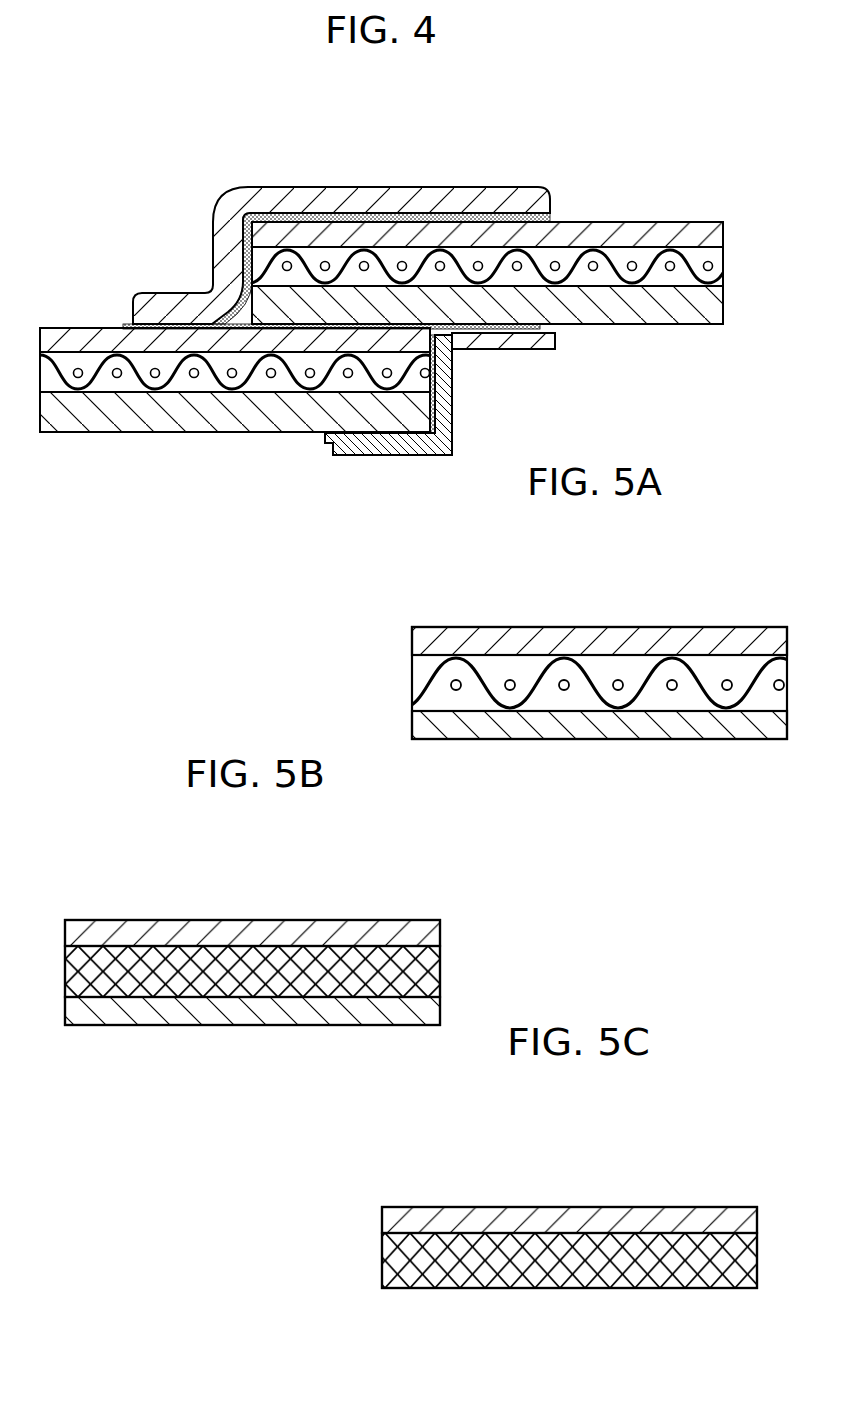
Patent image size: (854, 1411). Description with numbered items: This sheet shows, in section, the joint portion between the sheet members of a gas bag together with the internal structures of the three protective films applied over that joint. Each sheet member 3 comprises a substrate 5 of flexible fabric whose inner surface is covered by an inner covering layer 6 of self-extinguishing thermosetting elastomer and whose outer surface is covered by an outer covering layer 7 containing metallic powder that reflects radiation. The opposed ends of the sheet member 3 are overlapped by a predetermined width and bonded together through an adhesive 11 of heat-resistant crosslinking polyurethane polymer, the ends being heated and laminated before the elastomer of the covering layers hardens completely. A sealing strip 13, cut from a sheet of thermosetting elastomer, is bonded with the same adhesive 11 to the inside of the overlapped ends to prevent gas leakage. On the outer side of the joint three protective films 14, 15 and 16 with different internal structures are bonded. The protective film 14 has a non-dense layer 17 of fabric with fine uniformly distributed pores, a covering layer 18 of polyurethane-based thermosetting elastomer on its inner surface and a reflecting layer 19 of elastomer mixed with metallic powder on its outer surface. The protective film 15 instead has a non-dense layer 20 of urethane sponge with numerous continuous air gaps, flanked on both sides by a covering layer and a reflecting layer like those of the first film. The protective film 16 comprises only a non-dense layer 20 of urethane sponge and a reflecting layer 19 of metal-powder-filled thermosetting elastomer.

In FIG. 4, the sheet member 3 is at (58, 328).
In FIG. 4, the substrate 5 is at (688, 263).
In FIG. 4, the inner covering layer 6 is at (636, 315).
In FIG. 4, the outer covering layer 7 is at (693, 235).
In FIG. 4, the adhesive 11 is at (505, 221).
In FIG. 4, the sealing strip 13 is at (380, 447).
In FIG. 4, the protective film 14 is at (366, 197).
In FIG. 5A, the protective film 14 is at (607, 680).
In FIG. 5B, the protective film 15 is at (252, 972).
In FIG. 5C, the protective film 16 is at (569, 1248).
In FIG. 5A, the non-dense layer 17 is at (563, 692).
In FIG. 5A, the covering layer 18 is at (730, 730).
In FIG. 5B, the covering layer 18 is at (388, 1012).
In FIG. 5A, the reflecting layer 19 is at (600, 632).
In FIG. 5B, the reflecting layer 19 is at (246, 930).
In FIG. 5C, the reflecting layer 19 is at (562, 1215).
In FIG. 5B, the non-dense layer 20 is at (244, 980).
In FIG. 5C, the non-dense layer 20 is at (673, 1270).